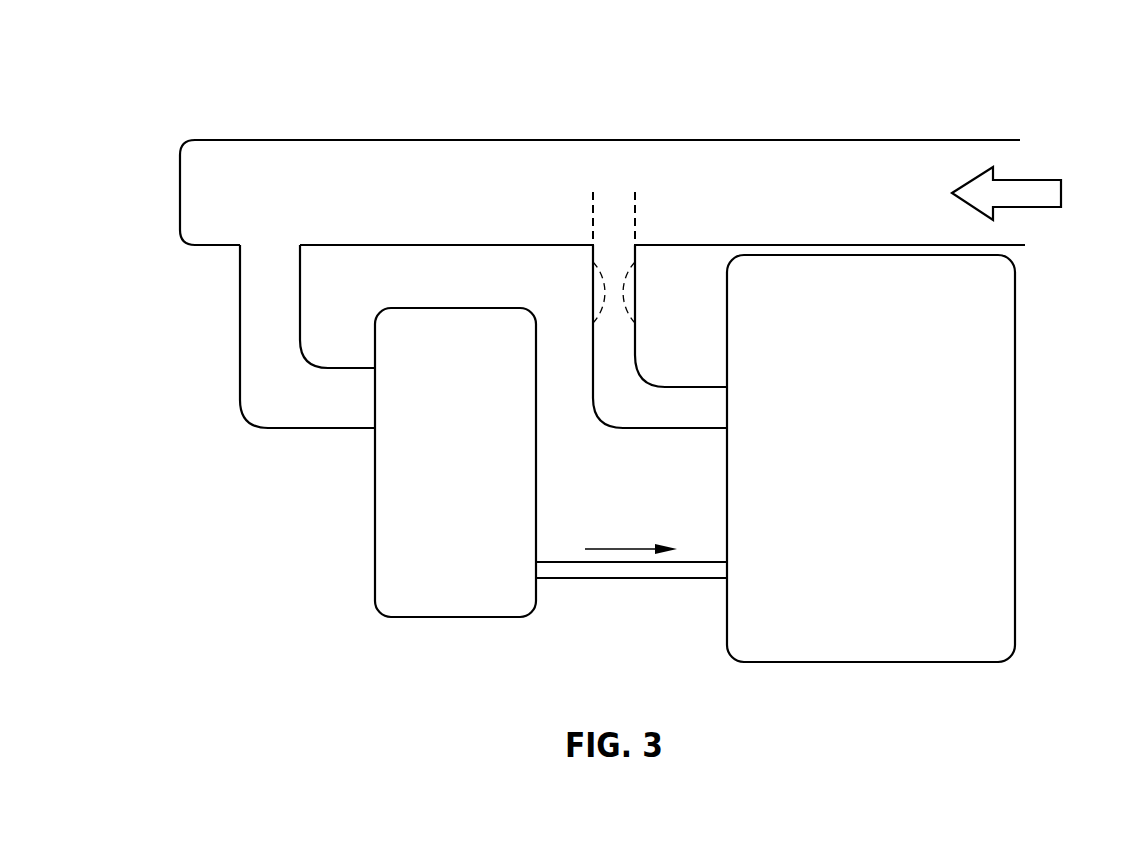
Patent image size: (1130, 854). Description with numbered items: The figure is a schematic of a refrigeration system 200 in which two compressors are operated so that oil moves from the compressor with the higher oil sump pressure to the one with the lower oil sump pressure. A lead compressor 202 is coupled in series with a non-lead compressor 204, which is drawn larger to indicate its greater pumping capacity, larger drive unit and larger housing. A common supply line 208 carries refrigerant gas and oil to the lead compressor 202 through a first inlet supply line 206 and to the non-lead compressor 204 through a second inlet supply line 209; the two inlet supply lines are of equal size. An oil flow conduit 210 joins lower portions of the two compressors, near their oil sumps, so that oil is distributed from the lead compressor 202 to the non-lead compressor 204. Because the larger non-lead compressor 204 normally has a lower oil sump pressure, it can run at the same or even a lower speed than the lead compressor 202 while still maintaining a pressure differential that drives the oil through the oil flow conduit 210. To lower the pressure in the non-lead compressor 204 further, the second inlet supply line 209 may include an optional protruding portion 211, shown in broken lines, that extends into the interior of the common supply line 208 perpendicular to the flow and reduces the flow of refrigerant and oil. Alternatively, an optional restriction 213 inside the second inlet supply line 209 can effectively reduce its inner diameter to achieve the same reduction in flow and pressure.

The refrigeration system 200 is at (994, 51).
The lead compressor 202 is at (413, 620).
The non-lead compressor 204 is at (764, 664).
The first inlet supply line 206 is at (240, 266).
The common supply line 208 is at (360, 138).
The second inlet supply line 209 is at (593, 278).
The oil flow conduit 210 is at (575, 580).
The protruding portion 211 is at (593, 213).
The restriction 213 is at (633, 280).